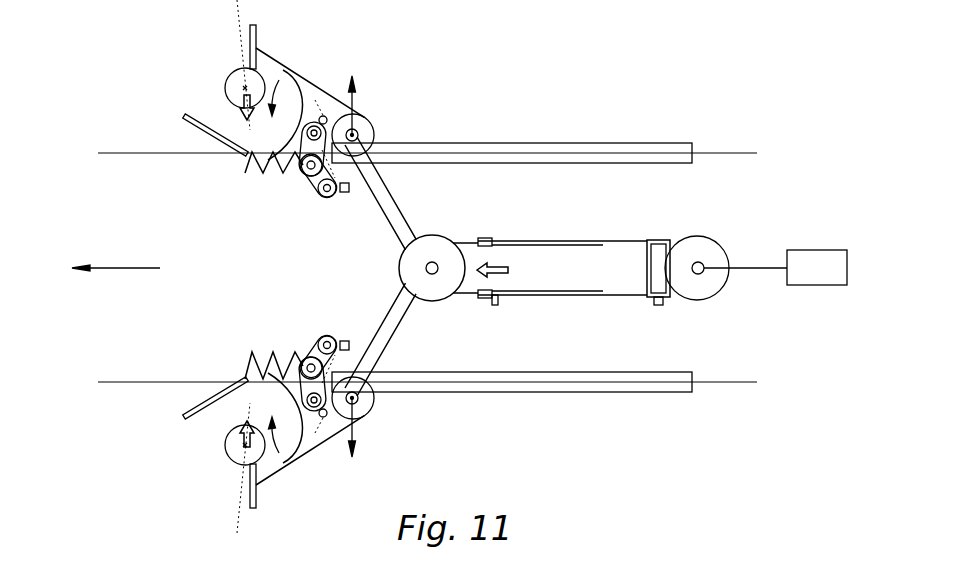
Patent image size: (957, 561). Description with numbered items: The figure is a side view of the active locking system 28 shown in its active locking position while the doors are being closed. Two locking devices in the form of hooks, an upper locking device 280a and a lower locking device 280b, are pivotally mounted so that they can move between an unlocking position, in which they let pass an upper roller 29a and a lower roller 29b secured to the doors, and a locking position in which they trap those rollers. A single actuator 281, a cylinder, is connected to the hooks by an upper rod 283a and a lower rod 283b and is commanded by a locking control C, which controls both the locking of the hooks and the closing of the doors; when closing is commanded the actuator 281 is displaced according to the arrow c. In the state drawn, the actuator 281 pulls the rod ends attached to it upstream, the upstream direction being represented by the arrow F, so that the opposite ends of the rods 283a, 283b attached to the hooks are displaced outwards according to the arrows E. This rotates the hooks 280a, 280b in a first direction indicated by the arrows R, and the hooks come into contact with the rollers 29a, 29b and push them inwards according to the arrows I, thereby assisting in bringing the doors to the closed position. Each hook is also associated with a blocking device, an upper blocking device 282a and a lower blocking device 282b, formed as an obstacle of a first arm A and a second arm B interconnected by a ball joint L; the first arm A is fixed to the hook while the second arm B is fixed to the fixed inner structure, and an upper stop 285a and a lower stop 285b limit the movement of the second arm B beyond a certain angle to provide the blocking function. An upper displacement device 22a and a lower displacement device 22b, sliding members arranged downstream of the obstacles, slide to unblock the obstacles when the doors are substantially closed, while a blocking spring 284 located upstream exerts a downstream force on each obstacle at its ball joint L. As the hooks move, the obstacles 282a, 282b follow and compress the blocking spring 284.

The active locking system 28 is at (556, 105).
The upper displacement device 22a is at (646, 150).
The lower displacement device 22b is at (646, 386).
The upper roller 29a is at (237, 80).
The lower roller 29b is at (238, 457).
The upper locking device 280a is at (266, 68).
The lower locking device 280b is at (267, 468).
The actuator 281 is at (632, 250).
The upper blocking device 282a is at (314, 180).
The lower blocking device 282b is at (314, 353).
The upper rod 283a is at (406, 208).
The lower rod 283b is at (406, 327).
The blocking spring 284 is at (260, 174).
The upper stop 285a is at (352, 193).
The lower stop 285b is at (352, 345).
The first arm A is at (301, 142).
The second arm B is at (338, 197).
The locking control C is at (818, 250).
The arrows E is at (356, 110).
The arrow F is at (122, 267).
The arrows I is at (238, 105).
The ball joint L is at (311, 181).
The arrows R is at (284, 76).
The arrow c is at (499, 263).